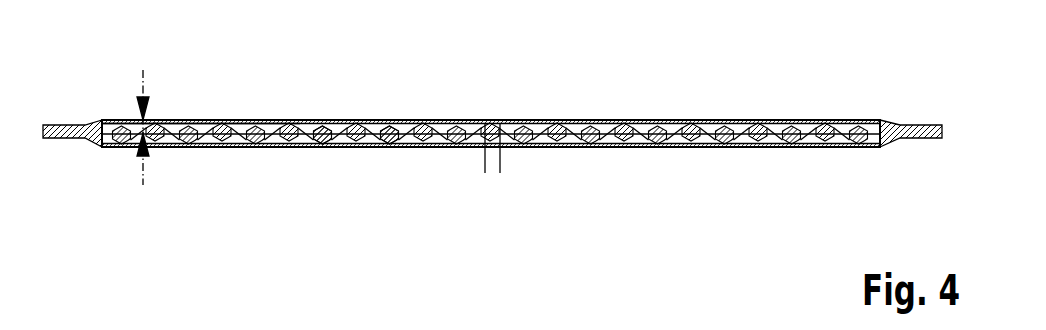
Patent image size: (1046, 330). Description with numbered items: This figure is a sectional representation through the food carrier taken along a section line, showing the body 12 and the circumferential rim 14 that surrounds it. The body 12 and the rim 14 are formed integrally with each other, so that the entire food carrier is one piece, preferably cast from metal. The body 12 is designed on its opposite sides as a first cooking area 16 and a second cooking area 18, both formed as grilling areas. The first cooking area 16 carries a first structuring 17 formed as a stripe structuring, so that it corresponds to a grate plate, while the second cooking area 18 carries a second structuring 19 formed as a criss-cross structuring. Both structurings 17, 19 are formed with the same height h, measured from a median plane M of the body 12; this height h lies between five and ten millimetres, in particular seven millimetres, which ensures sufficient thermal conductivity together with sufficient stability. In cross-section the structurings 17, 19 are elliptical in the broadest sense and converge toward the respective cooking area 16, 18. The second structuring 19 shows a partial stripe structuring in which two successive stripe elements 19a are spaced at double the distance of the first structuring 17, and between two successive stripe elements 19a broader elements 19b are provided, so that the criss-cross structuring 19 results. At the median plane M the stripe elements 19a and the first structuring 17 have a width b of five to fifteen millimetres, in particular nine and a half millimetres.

The body 12 is at (425, 132).
The circumferential rim 14 is at (63, 133).
The first cooking area 16 is at (636, 112).
The second cooking area 18 is at (638, 156).
The first structuring 17 is at (296, 121).
The median plane M is at (541, 133).
The second structuring 19 is at (222, 147).
The stripe elements 19a is at (323, 132).
The broader elements 19b is at (353, 140).
The height h is at (145, 111).
The width b is at (493, 168).